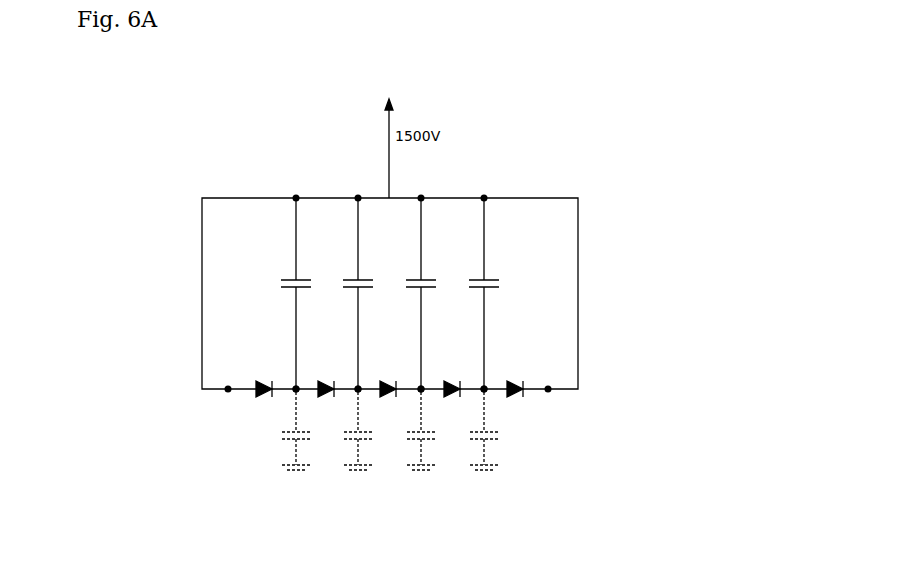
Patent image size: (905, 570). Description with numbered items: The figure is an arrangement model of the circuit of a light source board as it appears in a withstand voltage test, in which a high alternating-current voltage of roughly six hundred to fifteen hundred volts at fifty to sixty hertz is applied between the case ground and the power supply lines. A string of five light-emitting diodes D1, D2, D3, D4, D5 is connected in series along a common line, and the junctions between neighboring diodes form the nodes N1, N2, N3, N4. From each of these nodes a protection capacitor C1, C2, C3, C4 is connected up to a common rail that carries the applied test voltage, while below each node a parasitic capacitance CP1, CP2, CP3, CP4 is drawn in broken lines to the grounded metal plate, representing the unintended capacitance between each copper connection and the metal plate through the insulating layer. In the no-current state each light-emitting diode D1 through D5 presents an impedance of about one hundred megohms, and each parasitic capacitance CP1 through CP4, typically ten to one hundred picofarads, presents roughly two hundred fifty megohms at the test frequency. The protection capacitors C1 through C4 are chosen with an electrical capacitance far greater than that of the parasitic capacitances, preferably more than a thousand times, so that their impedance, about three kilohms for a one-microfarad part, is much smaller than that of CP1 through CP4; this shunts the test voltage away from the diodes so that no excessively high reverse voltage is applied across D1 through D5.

The protection capacitor C1 is at (488, 293).
The protection capacitor C2 is at (426, 293).
The protection capacitor C3 is at (363, 293).
The protection capacitor C4 is at (301, 293).
The light-emitting diode D1 is at (514, 378).
The light-emitting diode D2 is at (451, 378).
The light-emitting diode D3 is at (387, 378).
The light-emitting diode D4 is at (325, 378).
The light-emitting diode D5 is at (263, 378).
The node N1 is at (481, 385).
The node N2 is at (418, 385).
The node N3 is at (355, 385).
The node N4 is at (293, 385).
The parasitic capacitance CP1 is at (496, 441).
The parasitic capacitance CP2 is at (433, 441).
The parasitic capacitance CP3 is at (370, 441).
The parasitic capacitance CP4 is at (308, 441).